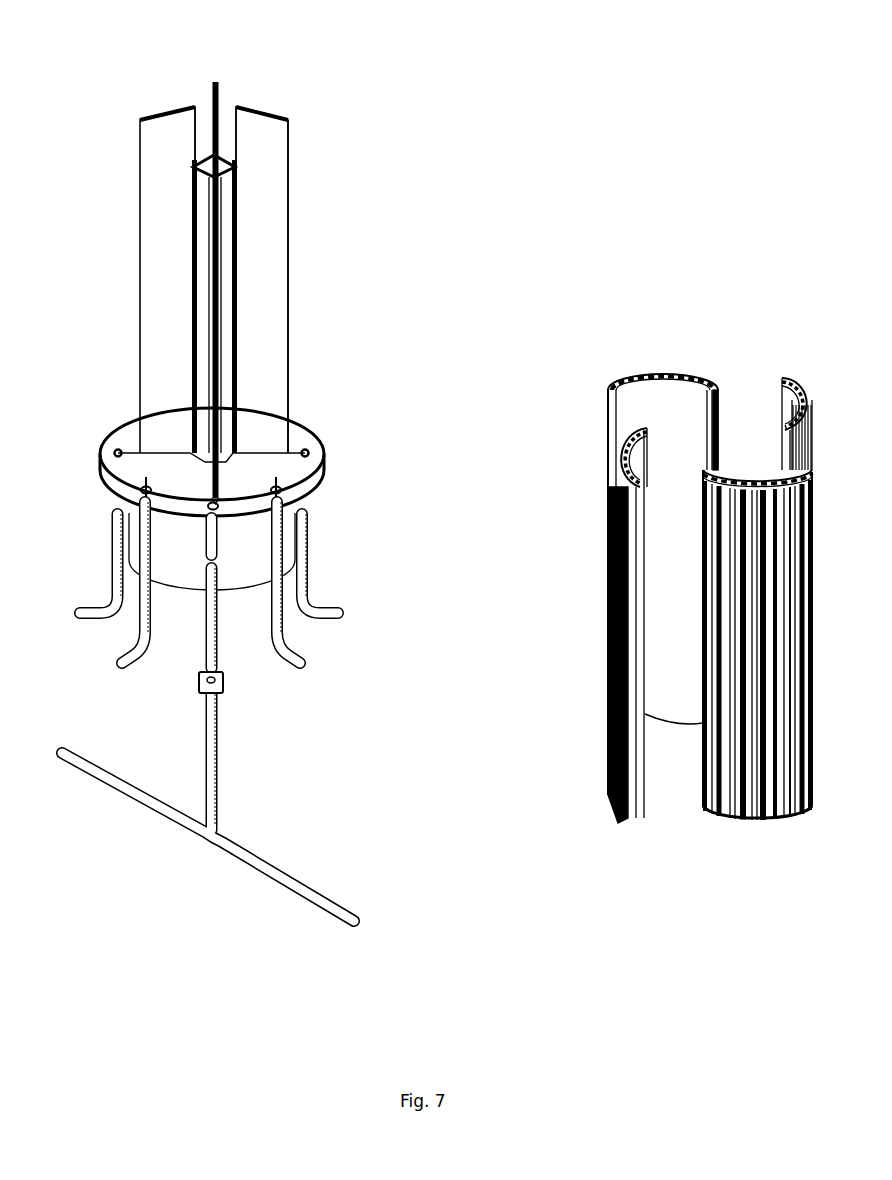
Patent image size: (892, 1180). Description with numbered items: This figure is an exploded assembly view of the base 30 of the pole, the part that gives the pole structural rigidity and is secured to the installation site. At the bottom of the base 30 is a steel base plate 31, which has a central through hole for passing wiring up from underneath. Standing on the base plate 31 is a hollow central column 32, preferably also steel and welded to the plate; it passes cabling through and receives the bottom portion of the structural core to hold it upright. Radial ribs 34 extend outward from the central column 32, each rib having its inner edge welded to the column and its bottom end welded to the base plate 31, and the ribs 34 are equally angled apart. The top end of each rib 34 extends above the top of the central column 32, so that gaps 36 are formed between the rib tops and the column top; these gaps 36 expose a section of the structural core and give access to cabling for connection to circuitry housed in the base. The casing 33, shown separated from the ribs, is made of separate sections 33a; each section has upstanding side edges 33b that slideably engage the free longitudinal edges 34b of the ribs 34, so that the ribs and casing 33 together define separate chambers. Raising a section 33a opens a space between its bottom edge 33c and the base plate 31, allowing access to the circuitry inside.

The base 30 is at (605, 92).
The base plate 31 is at (293, 470).
The central column 32 is at (203, 220).
The casing 33 is at (610, 328).
The section 33a is at (670, 403).
The upstanding side edge 33b is at (608, 423).
The bottom edge 33c is at (680, 723).
The radial rib 34 is at (260, 140).
The free longitudinal edge 34b is at (290, 190).
The gap 36 is at (230, 135).